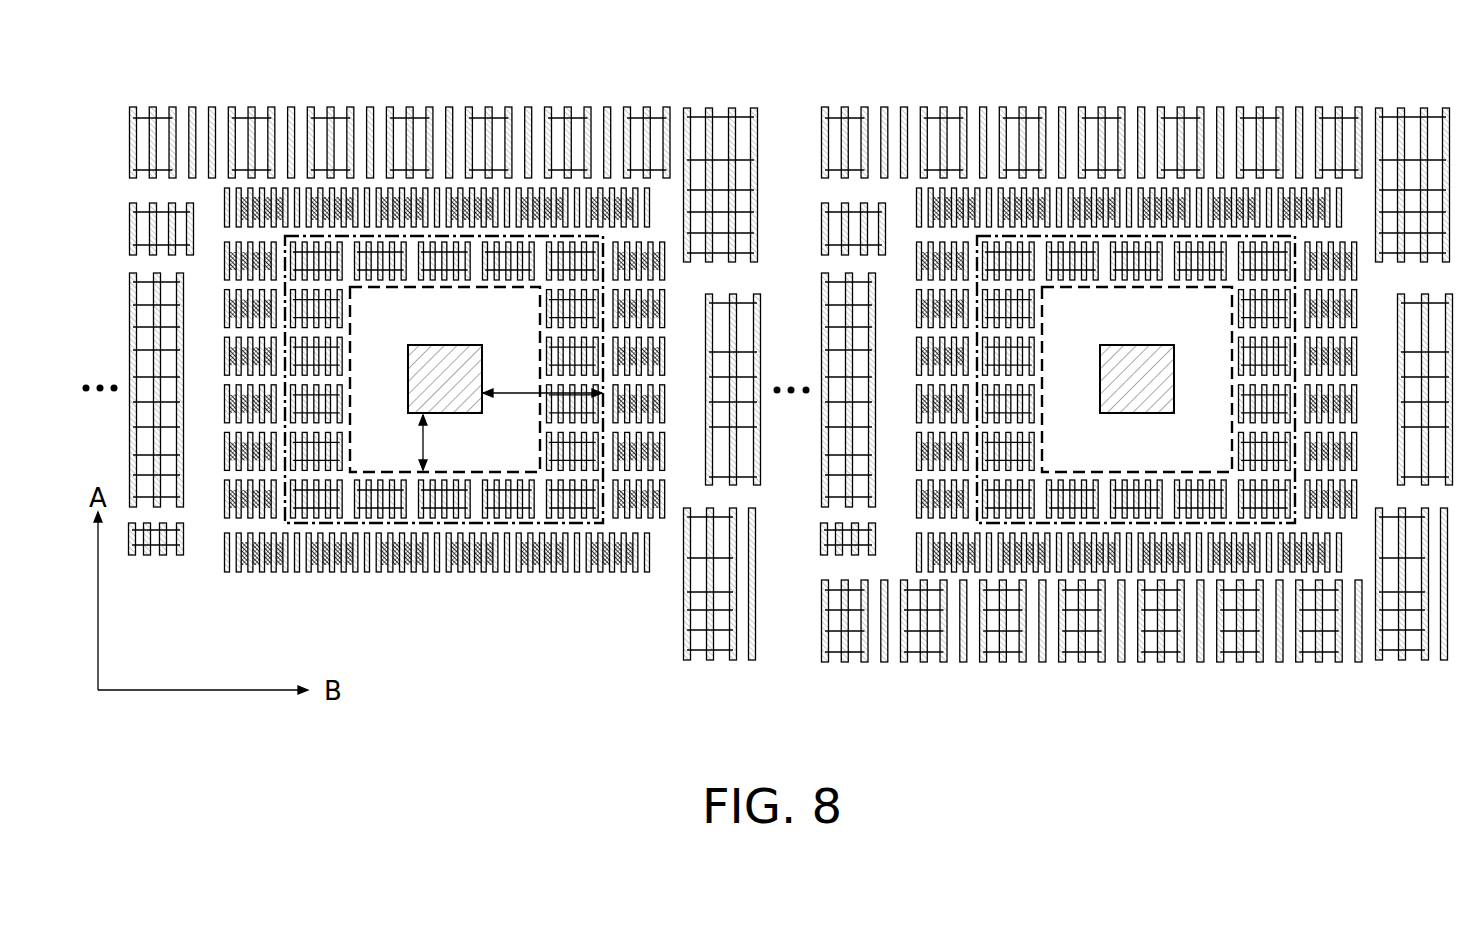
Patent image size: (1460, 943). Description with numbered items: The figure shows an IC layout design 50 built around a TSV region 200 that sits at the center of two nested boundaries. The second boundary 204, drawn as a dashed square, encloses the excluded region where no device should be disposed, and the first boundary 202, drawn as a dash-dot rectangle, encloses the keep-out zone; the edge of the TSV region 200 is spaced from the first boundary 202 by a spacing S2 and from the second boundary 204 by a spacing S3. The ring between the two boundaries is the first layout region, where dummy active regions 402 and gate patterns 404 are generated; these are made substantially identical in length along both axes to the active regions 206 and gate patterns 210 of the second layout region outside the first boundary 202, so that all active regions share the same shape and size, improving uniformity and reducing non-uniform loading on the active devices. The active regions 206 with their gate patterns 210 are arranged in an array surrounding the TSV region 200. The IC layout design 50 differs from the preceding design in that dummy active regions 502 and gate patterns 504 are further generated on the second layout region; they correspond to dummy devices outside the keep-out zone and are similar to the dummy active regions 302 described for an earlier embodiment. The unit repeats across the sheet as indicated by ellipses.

The IC layout design 50 is at (1418, 57).
The gate patterns 504 is at (136, 312).
The dummy active regions 302 is at (240, 137).
The dummy active regions 402 is at (366, 260).
The gate patterns 210 is at (405, 197).
The TSV region 200 is at (428, 368).
The gate patterns 404 is at (497, 257).
The active regions 206 is at (548, 195).
The dummy active regions 502 is at (722, 243).
The first boundary 202 is at (421, 524).
The second boundary 204 is at (543, 452).
The spacing S2 is at (542, 378).
The spacing S3 is at (440, 442).